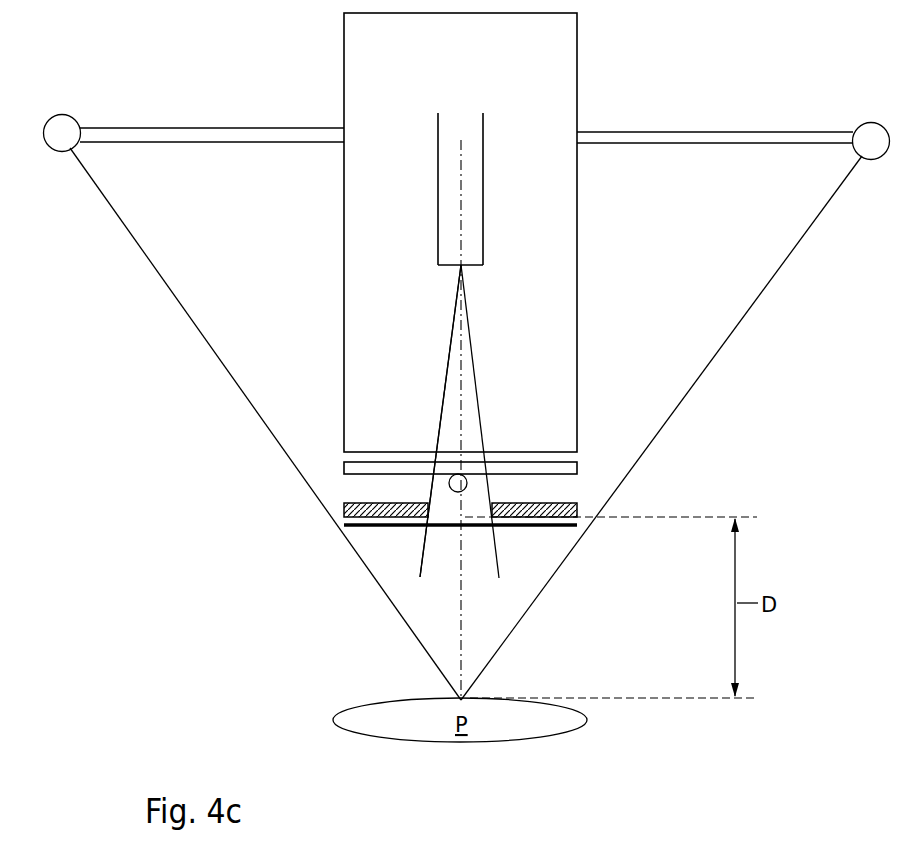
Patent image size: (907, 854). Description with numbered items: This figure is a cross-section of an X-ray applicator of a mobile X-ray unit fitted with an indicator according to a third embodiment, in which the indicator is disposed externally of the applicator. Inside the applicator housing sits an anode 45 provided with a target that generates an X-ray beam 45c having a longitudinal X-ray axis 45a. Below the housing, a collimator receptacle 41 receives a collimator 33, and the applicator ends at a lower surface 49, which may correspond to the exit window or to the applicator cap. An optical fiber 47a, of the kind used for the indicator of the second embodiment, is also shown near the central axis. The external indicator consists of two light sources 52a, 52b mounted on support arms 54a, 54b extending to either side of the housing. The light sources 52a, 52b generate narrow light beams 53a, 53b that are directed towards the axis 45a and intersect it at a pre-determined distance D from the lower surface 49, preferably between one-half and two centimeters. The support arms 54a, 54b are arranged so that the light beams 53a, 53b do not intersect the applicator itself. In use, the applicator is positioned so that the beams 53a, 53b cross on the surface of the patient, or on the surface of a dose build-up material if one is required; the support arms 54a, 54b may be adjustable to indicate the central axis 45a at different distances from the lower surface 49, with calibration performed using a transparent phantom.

The collimator 33 is at (344, 512).
The collimator receptacle 41 is at (344, 466).
The anode 45 is at (484, 195).
The longitudinal X-ray axis 45a is at (463, 346).
The X-ray beam 45c is at (438, 419).
The optical fiber 47a is at (449, 486).
The lower surface 49 is at (344, 530).
The light source 52a is at (62, 114).
The light source 52b is at (870, 122).
The light beam 53a is at (190, 322).
The light beam 53b is at (738, 324).
The support arm 54a is at (158, 127).
The support arm 54b is at (708, 131).